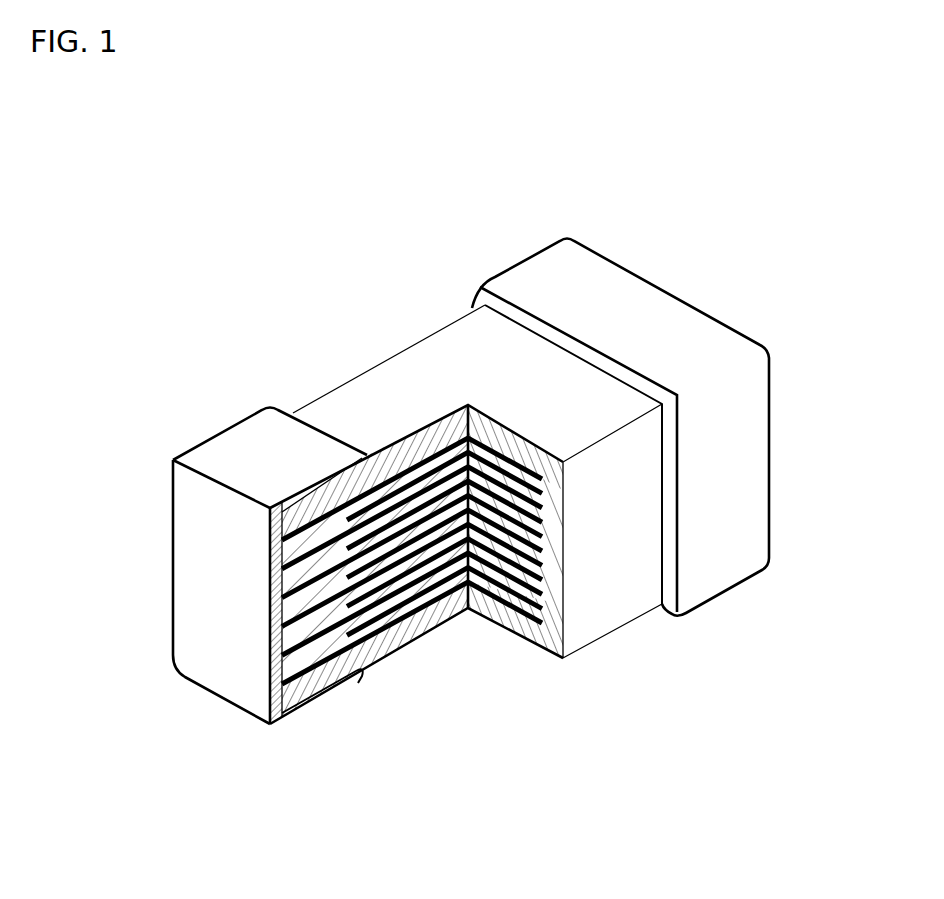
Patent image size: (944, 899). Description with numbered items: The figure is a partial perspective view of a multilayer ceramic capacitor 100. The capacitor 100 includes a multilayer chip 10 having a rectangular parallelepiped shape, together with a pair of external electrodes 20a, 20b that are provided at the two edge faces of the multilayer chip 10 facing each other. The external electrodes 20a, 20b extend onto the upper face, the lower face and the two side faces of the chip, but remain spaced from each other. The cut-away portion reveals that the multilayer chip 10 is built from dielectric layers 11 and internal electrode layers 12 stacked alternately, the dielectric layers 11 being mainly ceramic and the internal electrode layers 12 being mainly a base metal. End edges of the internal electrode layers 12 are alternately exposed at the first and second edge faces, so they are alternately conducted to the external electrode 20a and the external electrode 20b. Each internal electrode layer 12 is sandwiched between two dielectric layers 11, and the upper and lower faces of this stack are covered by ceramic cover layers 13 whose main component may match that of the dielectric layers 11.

The multilayer ceramic capacitor 100 is at (867, 173).
The multilayer chip 10 is at (313, 402).
The dielectric layer 11 is at (390, 613).
The internal electrode layer 12 is at (363, 643).
The cover layer 13 is at (440, 347).
The external electrode 20a is at (196, 446).
The external electrode 20b is at (522, 277).